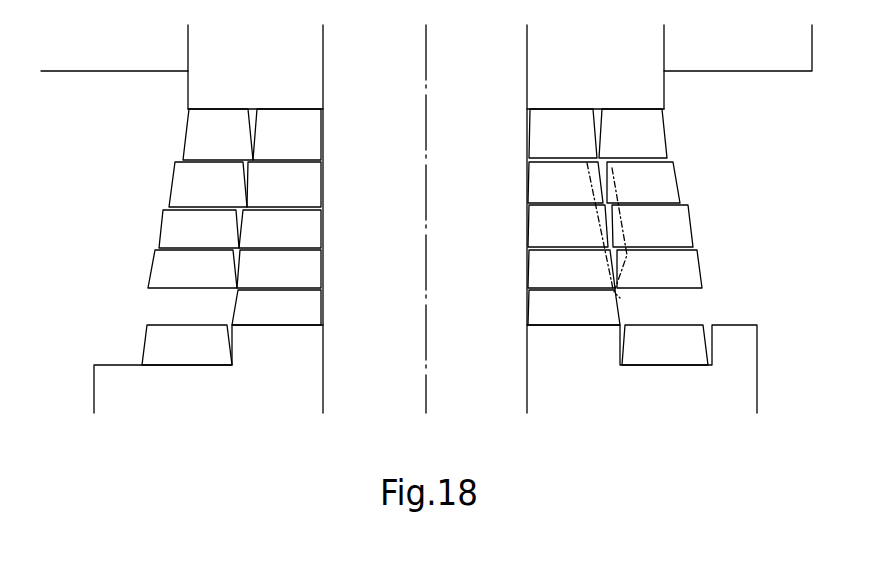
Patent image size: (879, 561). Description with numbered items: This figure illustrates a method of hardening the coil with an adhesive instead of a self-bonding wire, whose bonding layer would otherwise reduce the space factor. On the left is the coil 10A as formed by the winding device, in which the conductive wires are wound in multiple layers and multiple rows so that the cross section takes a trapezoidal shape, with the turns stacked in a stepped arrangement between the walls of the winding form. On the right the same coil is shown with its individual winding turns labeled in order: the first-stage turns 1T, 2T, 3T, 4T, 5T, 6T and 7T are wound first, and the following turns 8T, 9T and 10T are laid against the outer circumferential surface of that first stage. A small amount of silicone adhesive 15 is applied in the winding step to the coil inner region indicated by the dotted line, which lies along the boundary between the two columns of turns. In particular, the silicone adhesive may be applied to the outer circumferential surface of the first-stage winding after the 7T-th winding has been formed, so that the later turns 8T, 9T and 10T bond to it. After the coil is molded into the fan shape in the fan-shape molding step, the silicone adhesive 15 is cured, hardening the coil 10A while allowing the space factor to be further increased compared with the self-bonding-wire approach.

The coil 10A is at (183, 188).
The silicone adhesive 15 is at (604, 167).
The 1T-th winding 1T is at (665, 345).
The 2T-th winding 2T is at (574, 307).
The 3T-th winding 3T is at (571, 269).
The 4T-th winding 4T is at (568, 226).
The 5T-th winding 5T is at (565, 182).
The 6T-th winding 6T is at (563, 133).
The 7T-th winding 7T is at (633, 133).
The 8T-th winding 8T is at (643, 182).
The 9T-th winding 9T is at (652, 226).
The 10T-th winding 10T is at (659, 269).